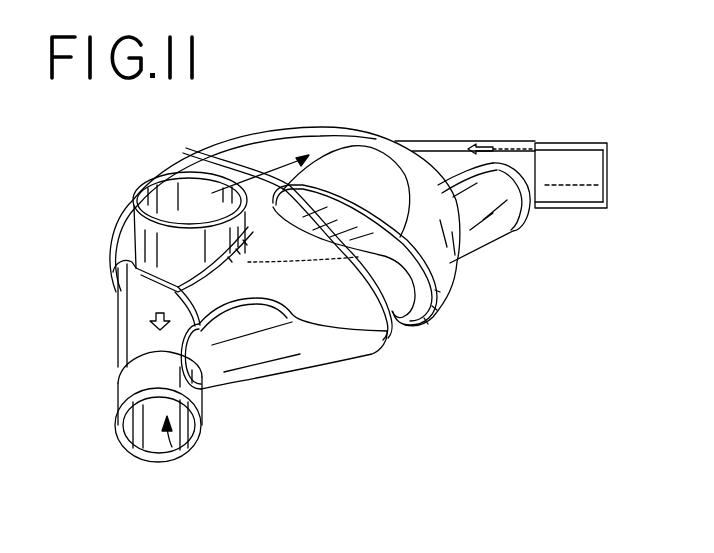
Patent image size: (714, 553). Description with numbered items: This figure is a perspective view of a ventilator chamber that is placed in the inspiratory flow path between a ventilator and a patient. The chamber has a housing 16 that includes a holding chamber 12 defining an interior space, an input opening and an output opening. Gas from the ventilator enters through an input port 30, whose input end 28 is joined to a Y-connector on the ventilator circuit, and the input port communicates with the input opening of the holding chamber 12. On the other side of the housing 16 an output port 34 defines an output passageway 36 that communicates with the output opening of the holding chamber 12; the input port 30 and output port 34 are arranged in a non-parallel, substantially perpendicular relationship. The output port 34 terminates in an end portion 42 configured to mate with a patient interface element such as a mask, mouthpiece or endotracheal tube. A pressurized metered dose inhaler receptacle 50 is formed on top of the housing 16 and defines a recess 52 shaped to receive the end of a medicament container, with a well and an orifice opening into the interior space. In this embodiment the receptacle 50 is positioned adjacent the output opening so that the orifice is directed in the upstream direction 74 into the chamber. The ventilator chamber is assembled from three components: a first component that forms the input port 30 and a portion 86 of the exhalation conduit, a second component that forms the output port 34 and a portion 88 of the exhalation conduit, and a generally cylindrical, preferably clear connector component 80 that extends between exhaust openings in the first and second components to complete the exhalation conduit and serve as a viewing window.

The holding chamber 12 is at (345, 170).
The housing 16 is at (331, 128).
The input end 28 is at (583, 190).
The input port 30 is at (570, 158).
The output port 34 is at (203, 403).
The output passageway 36 is at (172, 447).
The end portion 42 is at (116, 401).
The MDI receptacle 50 is at (154, 242).
The recess 52 is at (163, 210).
The upstream direction 74 is at (267, 178).
The connector component 80 is at (388, 322).
The portion of the exhalation conduit 86 is at (463, 260).
The portion of the exhalation conduit 88 is at (263, 353).